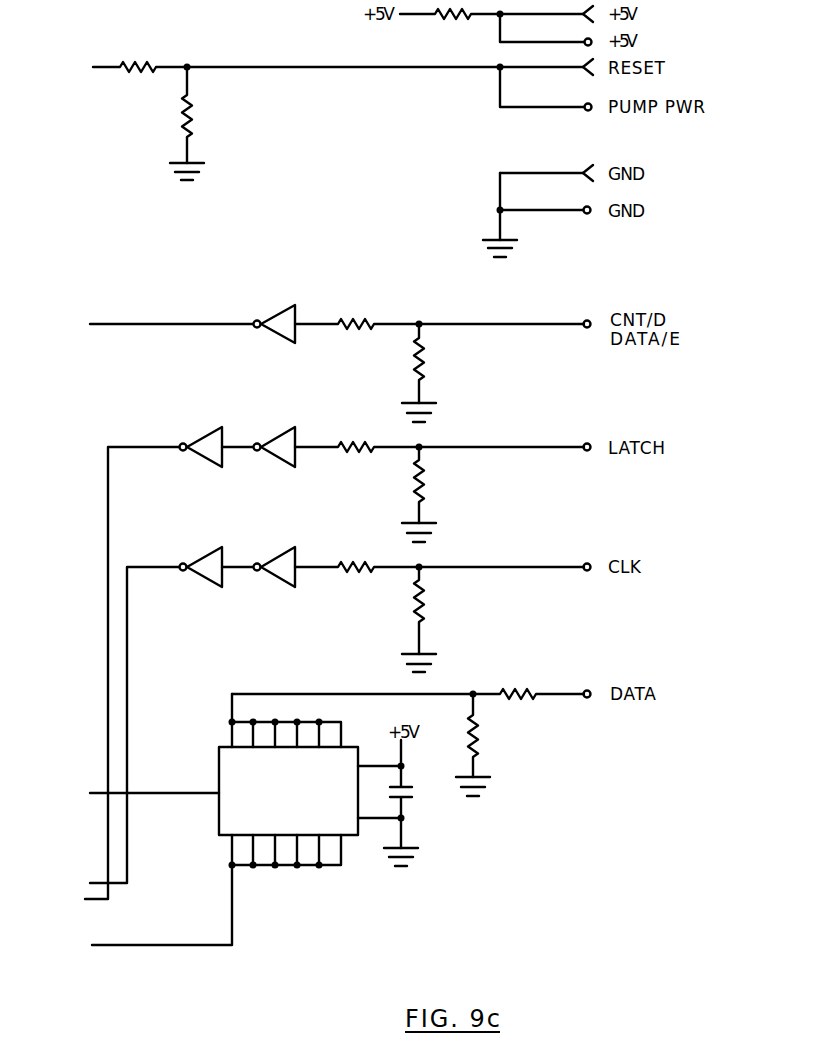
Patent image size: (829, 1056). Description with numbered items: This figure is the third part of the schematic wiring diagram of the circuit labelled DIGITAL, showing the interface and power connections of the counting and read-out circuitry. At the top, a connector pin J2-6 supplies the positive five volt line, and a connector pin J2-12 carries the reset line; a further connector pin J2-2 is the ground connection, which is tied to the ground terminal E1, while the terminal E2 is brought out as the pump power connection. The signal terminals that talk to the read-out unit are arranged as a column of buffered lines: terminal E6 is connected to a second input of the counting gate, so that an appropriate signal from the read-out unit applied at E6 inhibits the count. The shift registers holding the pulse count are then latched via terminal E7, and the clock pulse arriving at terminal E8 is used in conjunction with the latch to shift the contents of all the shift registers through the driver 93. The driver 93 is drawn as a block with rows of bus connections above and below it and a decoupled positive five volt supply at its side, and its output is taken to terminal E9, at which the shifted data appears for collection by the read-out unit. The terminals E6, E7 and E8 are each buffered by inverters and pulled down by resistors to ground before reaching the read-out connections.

The driver 93 is at (219, 771).
The ground terminal E1 is at (545, 201).
The pump power terminal E2 is at (546, 89).
The terminal E6 is at (505, 315).
The terminal E7 is at (505, 437).
The terminal E8 is at (505, 557).
The terminal E9 is at (532, 356).
The connector pin +5V J2-6 is at (546, 11).
The connector pin reset J2-12 is at (546, 60).
The connector pin ground J2-2 is at (546, 165).